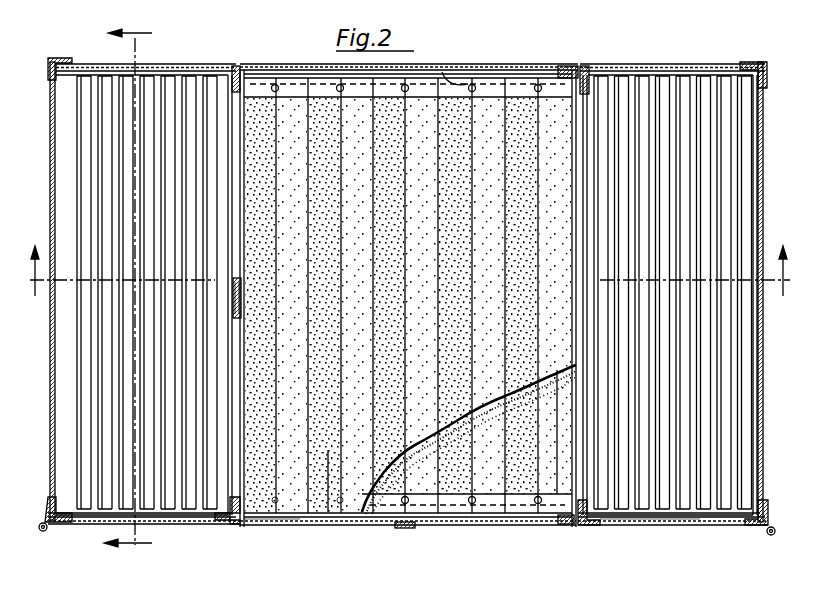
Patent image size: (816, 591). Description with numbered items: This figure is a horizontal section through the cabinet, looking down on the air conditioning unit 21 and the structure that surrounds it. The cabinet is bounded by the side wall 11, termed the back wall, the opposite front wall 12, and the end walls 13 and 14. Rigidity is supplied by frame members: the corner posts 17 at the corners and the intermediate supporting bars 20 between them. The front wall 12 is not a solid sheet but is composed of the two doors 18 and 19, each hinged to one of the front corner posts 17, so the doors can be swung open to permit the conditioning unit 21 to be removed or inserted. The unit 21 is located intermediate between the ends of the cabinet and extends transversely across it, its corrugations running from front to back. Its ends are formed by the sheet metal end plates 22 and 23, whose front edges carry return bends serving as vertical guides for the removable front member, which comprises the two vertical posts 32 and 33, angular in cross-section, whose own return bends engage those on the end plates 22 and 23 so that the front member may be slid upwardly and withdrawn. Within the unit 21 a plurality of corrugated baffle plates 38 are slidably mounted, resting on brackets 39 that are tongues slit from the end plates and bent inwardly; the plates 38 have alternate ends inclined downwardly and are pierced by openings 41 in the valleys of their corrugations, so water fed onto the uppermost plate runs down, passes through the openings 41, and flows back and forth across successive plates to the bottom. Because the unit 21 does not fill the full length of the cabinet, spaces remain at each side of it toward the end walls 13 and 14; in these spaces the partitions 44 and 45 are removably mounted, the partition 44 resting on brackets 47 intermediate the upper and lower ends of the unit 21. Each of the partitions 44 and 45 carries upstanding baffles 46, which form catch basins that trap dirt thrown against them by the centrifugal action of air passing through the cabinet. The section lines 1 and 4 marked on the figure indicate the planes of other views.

The section line 1- 1 is at (410, 271).
The section line 4- 4 is at (142, 569).
The side wall 11 is at (466, 58).
The front wall 12 is at (432, 532).
The end wall 13 is at (50, 352).
The end wall 14 is at (758, 322).
The corner post 17 is at (55, 60).
The door 18 is at (292, 526).
The door 19 is at (663, 526).
The intermediate supporting bar 20 is at (238, 68).
The air conditioning unit 21 is at (486, 102).
The end plate 22 is at (258, 75).
The end plate 23 is at (464, 504).
The vertical post 32 is at (568, 68).
The vertical post 33 is at (570, 524).
The baffle plate 38 is at (330, 490).
The bracket 39 is at (446, 72).
The opening 41 is at (278, 85).
The partition 44 is at (70, 170).
The partition 45 is at (730, 375).
The upstanding baffle 46 is at (115, 428).
The bracket 47 is at (180, 54).